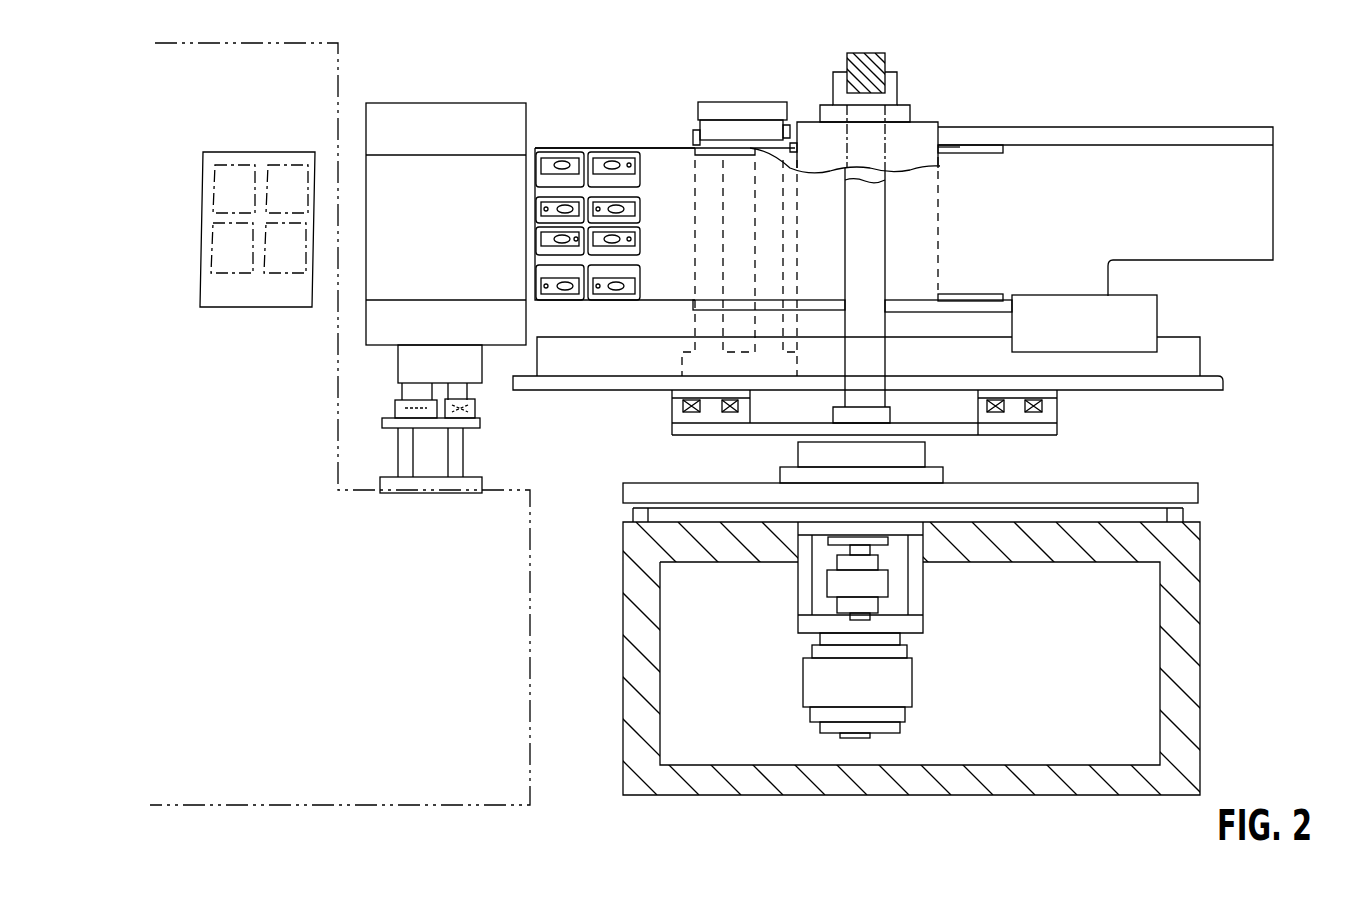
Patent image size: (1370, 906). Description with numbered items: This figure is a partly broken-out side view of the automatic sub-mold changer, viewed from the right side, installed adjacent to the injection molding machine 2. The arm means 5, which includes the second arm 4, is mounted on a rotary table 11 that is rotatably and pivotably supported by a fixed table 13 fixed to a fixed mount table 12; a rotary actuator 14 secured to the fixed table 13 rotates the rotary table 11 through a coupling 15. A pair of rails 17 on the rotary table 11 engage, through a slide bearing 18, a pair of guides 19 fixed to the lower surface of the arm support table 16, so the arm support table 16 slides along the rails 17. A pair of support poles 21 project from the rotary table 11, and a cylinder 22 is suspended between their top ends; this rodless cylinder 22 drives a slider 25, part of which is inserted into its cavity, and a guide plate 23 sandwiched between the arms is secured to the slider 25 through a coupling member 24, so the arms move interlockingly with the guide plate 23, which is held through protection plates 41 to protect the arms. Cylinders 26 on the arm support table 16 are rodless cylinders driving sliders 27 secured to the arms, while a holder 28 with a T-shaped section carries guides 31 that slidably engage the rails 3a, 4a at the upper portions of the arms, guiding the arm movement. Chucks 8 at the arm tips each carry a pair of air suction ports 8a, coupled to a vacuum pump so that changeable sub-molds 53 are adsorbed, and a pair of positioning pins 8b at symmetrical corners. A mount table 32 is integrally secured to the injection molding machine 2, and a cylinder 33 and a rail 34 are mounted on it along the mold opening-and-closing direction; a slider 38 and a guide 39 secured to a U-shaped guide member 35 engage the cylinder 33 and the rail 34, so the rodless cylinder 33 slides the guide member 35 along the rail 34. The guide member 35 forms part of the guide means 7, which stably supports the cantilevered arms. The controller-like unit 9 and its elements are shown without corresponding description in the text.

The injection molding machine 2 is at (527, 705).
The rail 3a is at (955, 147).
The second arm 4 is at (1125, 190).
The rail 4a is at (1140, 135).
The arm means 5 is at (1276, 153).
The guide means 7 is at (437, 247).
The chuck 8 is at (589, 208).
The air suction port 8a is at (557, 162).
The positioning pin 8b is at (597, 213).
The control unit 9 is at (257, 237).
The rotary table 11 is at (980, 430).
The fixed mount table 12 is at (1187, 590).
The fixed table 13 is at (1185, 494).
The rotary actuator 14 is at (900, 677).
The coupling 15 is at (872, 585).
The arm support table 16 is at (1205, 382).
The rail 17 is at (700, 418).
The slide bearing 18 is at (985, 405).
The guide 19 is at (672, 395).
The support pole 21 is at (865, 385).
The cylinder 22 is at (860, 52).
The guide plate 23 is at (912, 138).
The coupling member 24 is at (827, 118).
The slider 25 is at (890, 90).
The cylinder 26 is at (1185, 352).
The slider 27 is at (1145, 310).
The holder 28 is at (740, 125).
The guide 31 is at (718, 130).
The mount table 32 is at (468, 430).
The cylinder 33 is at (478, 415).
The rail 34 is at (395, 428).
The guide member 35 is at (428, 125).
The slider 38 is at (472, 392).
The guide 39 is at (410, 392).
The protection plate 41 is at (968, 150).
The changeable sub-mold 53 is at (262, 297).